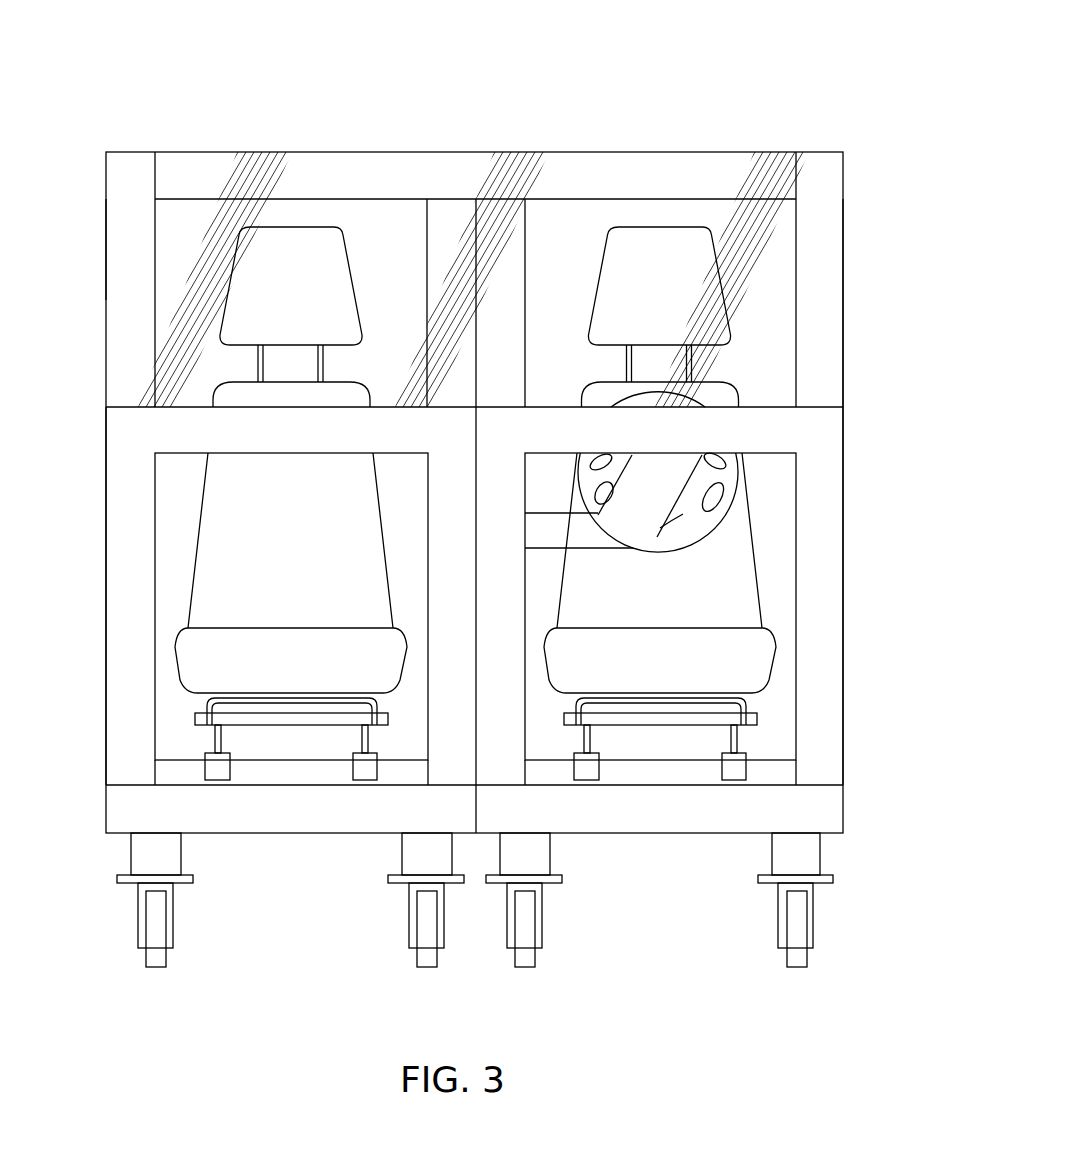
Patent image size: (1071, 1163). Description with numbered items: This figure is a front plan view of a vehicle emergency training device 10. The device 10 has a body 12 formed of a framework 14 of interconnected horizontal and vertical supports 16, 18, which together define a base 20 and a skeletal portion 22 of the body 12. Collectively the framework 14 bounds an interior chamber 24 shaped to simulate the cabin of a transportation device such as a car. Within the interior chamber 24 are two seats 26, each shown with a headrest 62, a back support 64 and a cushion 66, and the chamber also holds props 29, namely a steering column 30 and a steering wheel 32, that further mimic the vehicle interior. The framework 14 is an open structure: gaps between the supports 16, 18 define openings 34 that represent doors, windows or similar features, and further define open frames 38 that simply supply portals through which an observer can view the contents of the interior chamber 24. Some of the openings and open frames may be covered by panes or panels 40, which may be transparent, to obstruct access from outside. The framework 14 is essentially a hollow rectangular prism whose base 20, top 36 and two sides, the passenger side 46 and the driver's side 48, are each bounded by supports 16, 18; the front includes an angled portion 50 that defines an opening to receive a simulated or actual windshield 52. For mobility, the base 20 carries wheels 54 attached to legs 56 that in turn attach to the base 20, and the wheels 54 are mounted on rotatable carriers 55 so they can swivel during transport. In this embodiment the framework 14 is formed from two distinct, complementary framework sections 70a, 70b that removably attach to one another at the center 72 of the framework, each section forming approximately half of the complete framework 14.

The vehicle emergency training device 10 is at (474, 426).
The body 12 is at (832, 620).
The framework 14 is at (125, 582).
The horizontal supports 16 is at (650, 823).
The vertical supports 18 is at (832, 567).
The base 20 is at (168, 783).
The skeletal portion 22 is at (832, 268).
The interior chamber 24 is at (185, 260).
The seat 26 is at (300, 310).
The props 29 is at (643, 522).
The steering column 30 is at (604, 538).
The steering wheel 32 is at (704, 491).
The openings 34 is at (165, 365).
The top 36 is at (555, 150).
The open frames 38 is at (778, 722).
The panes/panels 40 is at (163, 497).
The passenger side 46 is at (107, 272).
The driver's side 48 is at (845, 352).
The angled portion 50 is at (832, 226).
The windshield 52 is at (730, 208).
The wheels 54 is at (150, 957).
The rotatable carriers 55 is at (137, 912).
The legs 56 is at (130, 846).
The headrest 62 is at (333, 270).
The back support 64 is at (362, 497).
The cushion 66 is at (285, 637).
The framework section 70a is at (113, 180).
The framework section 70b is at (835, 182).
The center 72 is at (475, 813).